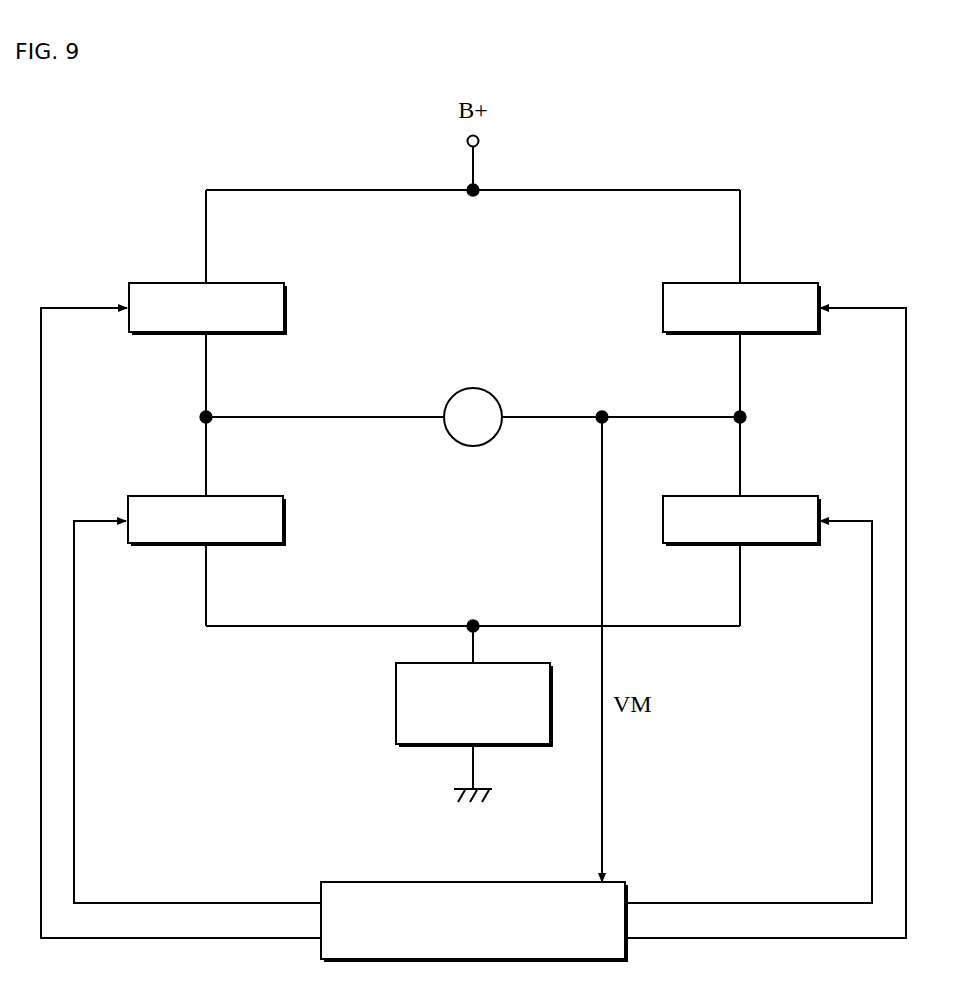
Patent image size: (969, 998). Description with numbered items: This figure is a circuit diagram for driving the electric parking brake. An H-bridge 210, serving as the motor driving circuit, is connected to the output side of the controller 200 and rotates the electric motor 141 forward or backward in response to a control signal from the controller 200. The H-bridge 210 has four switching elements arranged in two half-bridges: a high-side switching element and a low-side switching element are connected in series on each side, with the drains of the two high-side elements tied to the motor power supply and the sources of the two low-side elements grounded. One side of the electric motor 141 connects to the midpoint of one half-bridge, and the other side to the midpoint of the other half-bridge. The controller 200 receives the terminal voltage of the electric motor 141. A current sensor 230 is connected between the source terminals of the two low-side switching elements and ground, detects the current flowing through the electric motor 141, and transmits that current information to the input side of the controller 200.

The H-bridge 210 is at (740, 223).
The electric motor 141 is at (473, 388).
The current sensor 230 is at (396, 702).
The controller 200 is at (473, 882).